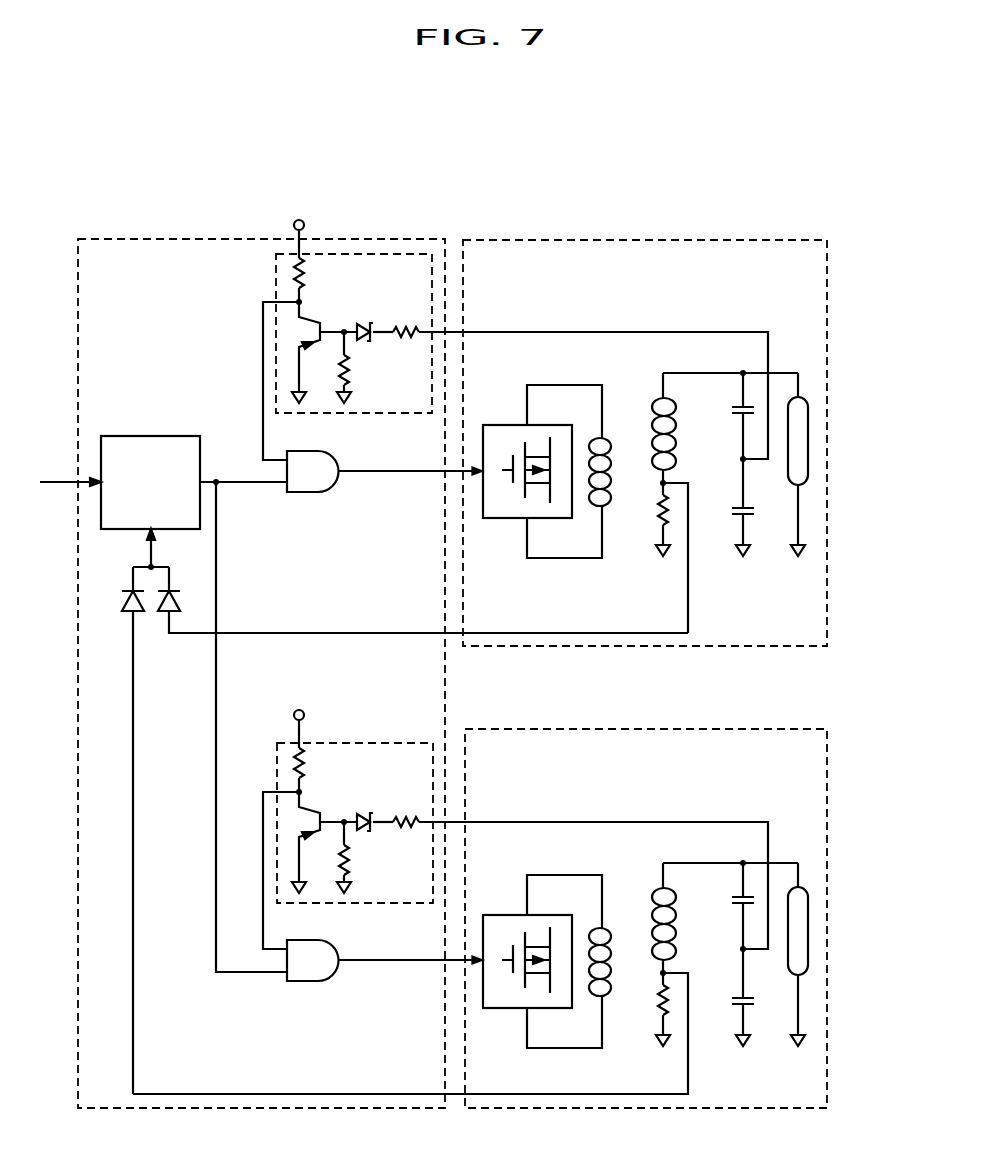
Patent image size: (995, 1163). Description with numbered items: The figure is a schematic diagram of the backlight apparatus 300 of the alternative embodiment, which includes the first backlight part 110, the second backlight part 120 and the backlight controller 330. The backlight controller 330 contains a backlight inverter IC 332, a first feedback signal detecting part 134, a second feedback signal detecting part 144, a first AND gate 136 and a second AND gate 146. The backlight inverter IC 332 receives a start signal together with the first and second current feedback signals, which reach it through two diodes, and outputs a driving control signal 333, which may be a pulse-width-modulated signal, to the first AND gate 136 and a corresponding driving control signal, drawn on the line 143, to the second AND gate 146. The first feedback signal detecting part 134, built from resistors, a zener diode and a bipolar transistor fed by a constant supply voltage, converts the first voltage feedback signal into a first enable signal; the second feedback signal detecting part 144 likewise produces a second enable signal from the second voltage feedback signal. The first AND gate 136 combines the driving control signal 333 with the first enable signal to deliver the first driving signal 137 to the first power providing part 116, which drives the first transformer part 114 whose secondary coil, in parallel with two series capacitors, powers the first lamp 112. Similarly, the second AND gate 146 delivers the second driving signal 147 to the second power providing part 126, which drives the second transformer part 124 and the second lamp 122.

The backlight apparatus 300 is at (445, 131).
The backlight controller 330 is at (378, 239).
The first feedback signal detecting part 134 is at (411, 254).
The first backlight part 110 is at (645, 240).
The backlight inverter IC 332 is at (151, 436).
The driving control signal 333 is at (258, 483).
The first AND gate 136 is at (303, 492).
The first driving signal 137 is at (408, 472).
The first power providing part 116 is at (497, 425).
The first transformer part 114 is at (613, 437).
The first lamp 112 is at (808, 440).
The second feedback signal detecting part 144 is at (383, 743).
The second backlight part 120 is at (645, 729).
The second control signal line 143 is at (258, 972).
The second AND gate 146 is at (305, 981).
The second driving signal 147 is at (410, 962).
The second power providing part 126 is at (498, 915).
The second transformer part 124 is at (617, 927).
The second lamp 122 is at (808, 930).